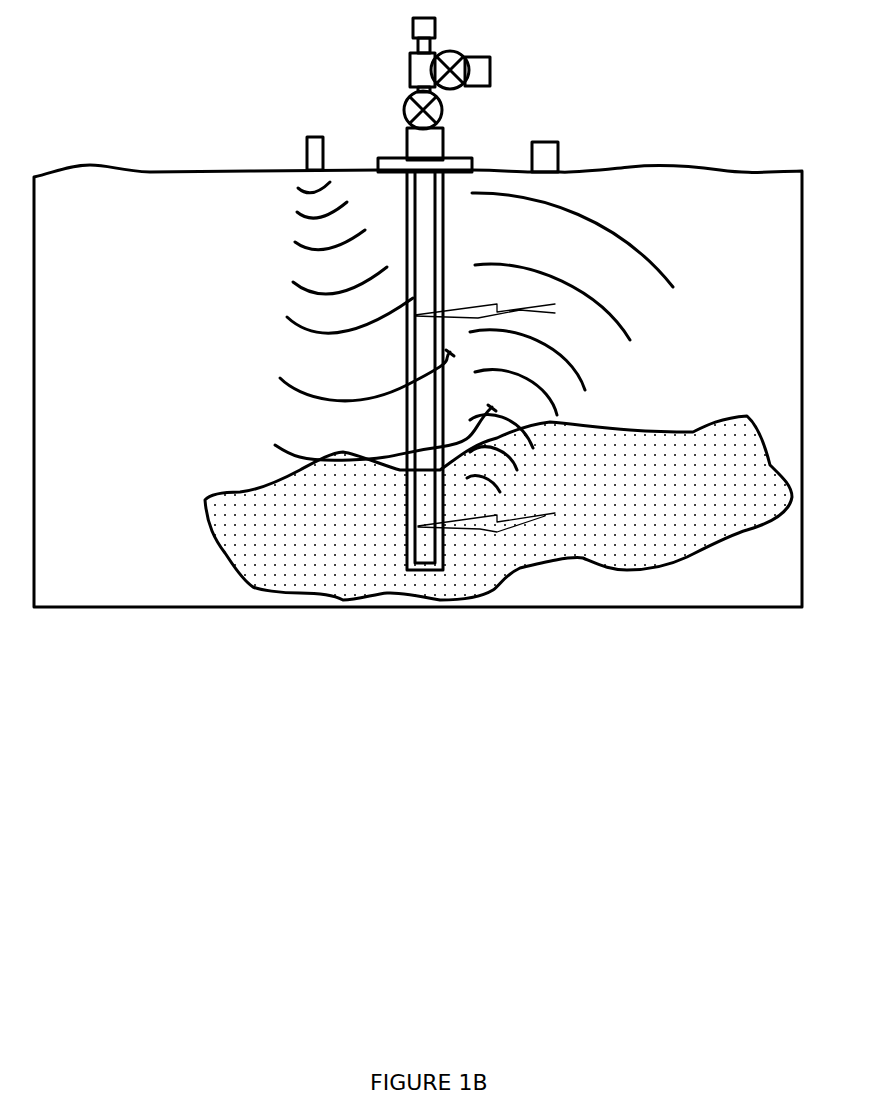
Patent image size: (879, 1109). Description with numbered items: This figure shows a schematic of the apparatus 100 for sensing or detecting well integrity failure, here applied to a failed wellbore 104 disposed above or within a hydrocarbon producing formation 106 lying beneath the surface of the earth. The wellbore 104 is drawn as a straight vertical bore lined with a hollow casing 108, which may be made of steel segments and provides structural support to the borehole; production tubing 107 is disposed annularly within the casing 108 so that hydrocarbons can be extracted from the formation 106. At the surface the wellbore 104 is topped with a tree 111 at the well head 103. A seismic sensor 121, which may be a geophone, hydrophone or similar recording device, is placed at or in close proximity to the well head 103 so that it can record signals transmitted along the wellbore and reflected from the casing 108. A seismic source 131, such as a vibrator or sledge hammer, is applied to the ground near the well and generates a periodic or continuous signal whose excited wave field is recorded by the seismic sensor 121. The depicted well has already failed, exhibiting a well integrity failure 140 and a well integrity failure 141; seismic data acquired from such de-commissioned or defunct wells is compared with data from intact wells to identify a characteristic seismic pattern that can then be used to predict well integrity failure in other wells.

The apparatus 100 is at (621, 88).
The well head 103 is at (443, 152).
The wellbore 104 is at (465, 278).
The hydrocarbon producing formation 106 is at (617, 530).
The production tubing 107 is at (445, 366).
The casing 108 is at (445, 270).
The tree 111 is at (490, 70).
The seismic sensor 121 is at (560, 150).
The seismic source 131 is at (305, 150).
The well integrity failure 140 is at (458, 523).
The well integrity failure 141 is at (540, 314).